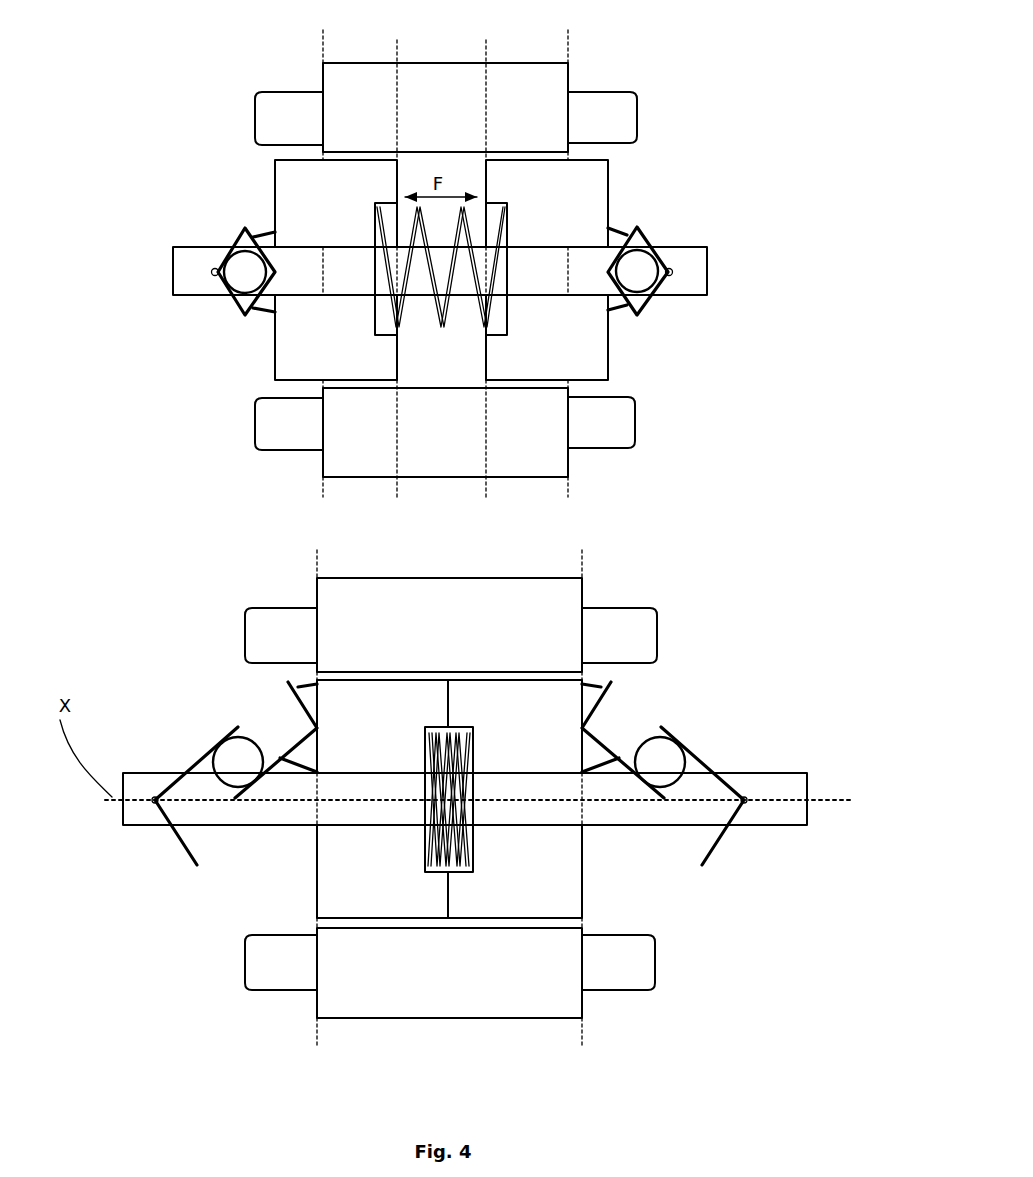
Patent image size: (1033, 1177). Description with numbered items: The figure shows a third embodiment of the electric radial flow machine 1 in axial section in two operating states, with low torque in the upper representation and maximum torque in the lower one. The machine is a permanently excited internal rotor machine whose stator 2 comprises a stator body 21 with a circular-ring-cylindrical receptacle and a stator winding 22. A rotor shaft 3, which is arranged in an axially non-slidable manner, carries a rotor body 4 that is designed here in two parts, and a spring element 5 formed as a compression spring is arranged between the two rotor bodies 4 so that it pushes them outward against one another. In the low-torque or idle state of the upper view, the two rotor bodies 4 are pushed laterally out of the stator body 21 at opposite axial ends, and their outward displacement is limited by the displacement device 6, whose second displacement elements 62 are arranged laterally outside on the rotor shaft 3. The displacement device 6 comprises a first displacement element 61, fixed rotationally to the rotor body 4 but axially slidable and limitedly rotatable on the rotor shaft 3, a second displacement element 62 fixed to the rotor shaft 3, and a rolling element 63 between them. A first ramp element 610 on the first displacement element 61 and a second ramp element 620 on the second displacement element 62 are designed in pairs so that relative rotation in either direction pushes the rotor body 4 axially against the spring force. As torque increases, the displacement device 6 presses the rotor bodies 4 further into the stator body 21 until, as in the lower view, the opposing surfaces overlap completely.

The electric radial flow machine 1 is at (704, 144).
The stator 2 is at (442, 510).
The stator body 21 is at (437, 88).
The stator winding 22 is at (312, 107).
The rotor shaft 3 is at (693, 270).
The rotor body 4 is at (598, 190).
The spring element 5 is at (397, 317).
The displacement device 6 is at (475, 569).
The first displacement element 61 is at (460, 513).
The first ramp element 610 is at (627, 310).
The second displacement element 62 is at (475, 566).
The second ramp element 620 is at (650, 303).
The rolling element 63 is at (640, 270).